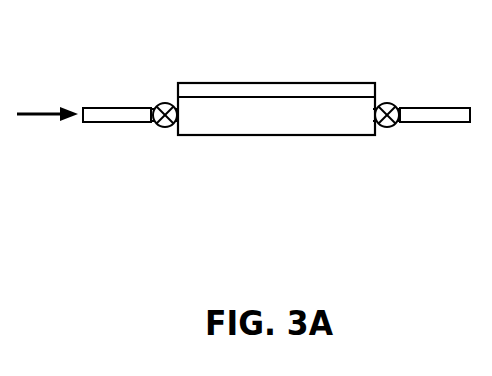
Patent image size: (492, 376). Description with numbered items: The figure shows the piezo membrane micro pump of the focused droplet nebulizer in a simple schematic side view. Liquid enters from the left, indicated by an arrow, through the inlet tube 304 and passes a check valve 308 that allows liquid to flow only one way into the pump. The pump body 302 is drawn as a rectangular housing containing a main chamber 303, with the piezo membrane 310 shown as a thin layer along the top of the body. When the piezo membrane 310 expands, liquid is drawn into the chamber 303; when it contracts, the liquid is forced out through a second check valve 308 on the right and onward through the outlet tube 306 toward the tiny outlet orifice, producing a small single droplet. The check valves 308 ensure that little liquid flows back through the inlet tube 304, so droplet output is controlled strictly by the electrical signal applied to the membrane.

The housing 302 is at (209, 135).
The chamber 303 is at (268, 117).
The inlet tube 304 is at (123, 118).
The outlet tube 306 is at (432, 116).
The valve 308 is at (164, 101).
The upper channel 310 is at (259, 92).